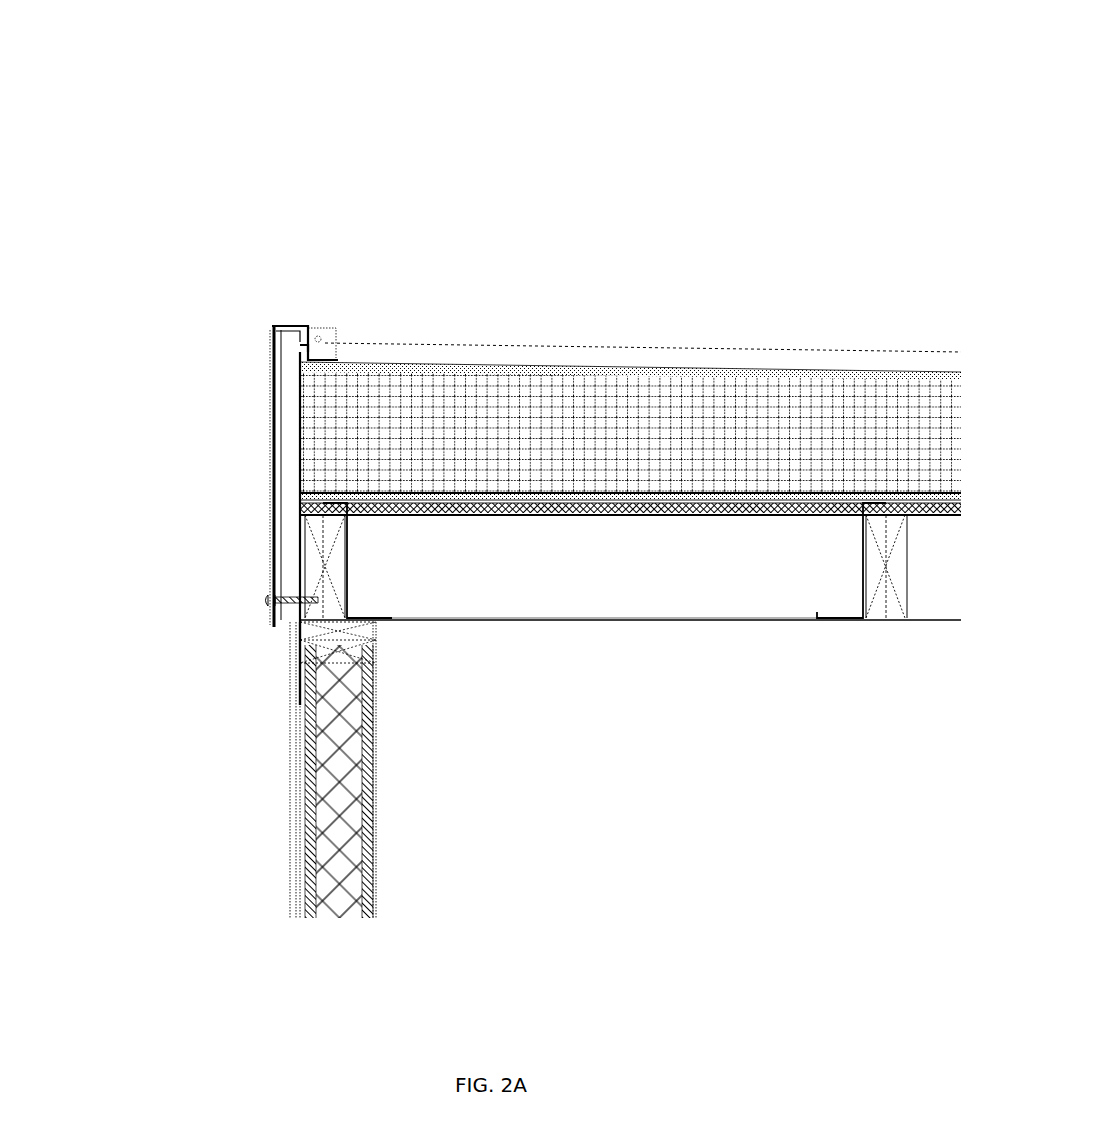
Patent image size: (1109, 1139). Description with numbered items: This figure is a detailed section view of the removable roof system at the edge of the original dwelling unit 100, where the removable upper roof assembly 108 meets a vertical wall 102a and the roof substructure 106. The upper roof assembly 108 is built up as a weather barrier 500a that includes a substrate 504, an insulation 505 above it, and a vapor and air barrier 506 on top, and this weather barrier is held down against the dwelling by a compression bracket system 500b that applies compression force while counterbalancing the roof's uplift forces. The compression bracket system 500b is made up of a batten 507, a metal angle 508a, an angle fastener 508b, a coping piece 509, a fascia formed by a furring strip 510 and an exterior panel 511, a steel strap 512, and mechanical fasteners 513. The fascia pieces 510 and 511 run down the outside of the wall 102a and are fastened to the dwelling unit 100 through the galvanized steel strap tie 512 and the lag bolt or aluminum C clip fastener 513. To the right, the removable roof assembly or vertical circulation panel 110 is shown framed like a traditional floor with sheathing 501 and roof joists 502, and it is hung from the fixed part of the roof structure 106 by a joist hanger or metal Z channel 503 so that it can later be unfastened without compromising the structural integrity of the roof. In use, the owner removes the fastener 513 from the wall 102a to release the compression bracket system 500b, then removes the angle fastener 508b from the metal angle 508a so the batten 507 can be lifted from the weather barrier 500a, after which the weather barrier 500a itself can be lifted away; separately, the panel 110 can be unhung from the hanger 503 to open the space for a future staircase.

The compression bracket system 500b is at (210, 320).
The weather barrier 500a is at (630, 490).
The original dwelling unit 100 is at (257, 816).
The vertical wall 102a is at (277, 706).
The roof substructure 106 is at (945, 637).
The removable upper roof assembly 108 is at (443, 246).
The removable roof assembly/vertical circulation panel 110 is at (617, 937).
The sheathing 501 is at (804, 517).
The roof joists 502 is at (770, 623).
The joist hanger or metal Z channel 503 is at (862, 554).
The substrate 504 is at (571, 496).
The insulation 505 is at (566, 404).
The vapor and air barrier 506 is at (540, 361).
The batten 507 is at (378, 340).
The metal angle 508a is at (300, 328).
The angle fastener 508b is at (305, 334).
The coping piece 509 is at (268, 320).
The furring strip 510 is at (290, 407).
The exterior panel 511 is at (278, 404).
The steel strap 512 is at (297, 576).
The mechanical fasteners 513 is at (264, 600).